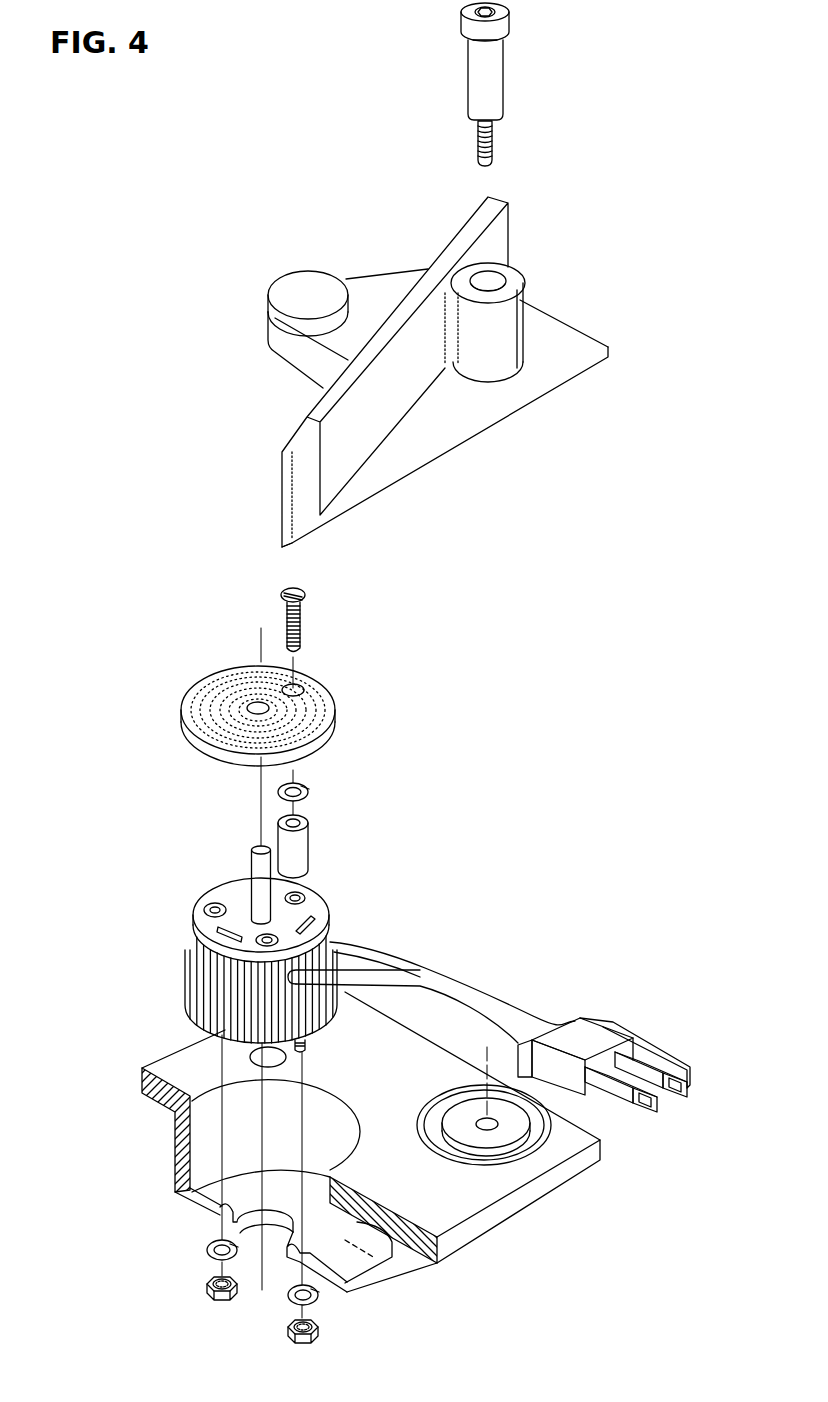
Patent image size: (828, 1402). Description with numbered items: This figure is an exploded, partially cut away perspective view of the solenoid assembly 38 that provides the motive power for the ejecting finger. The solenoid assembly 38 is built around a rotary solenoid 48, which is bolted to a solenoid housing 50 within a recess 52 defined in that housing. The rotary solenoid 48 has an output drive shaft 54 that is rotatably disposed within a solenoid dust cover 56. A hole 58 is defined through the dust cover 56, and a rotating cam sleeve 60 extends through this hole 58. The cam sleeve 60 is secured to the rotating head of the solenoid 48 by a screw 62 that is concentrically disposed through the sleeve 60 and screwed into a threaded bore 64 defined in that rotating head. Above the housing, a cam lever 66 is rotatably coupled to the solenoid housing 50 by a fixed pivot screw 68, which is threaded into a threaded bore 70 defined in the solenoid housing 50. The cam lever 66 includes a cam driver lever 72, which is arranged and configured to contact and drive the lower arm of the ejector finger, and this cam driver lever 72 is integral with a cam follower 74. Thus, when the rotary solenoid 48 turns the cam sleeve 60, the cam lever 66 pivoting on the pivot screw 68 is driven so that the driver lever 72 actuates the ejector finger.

The solenoid assembly 38 is at (607, 606).
The rotary solenoid 48 is at (388, 973).
The solenoid housing 50 is at (373, 1167).
The recess 52 is at (205, 1137).
The output drive shaft 54 is at (248, 893).
The solenoid dust cover 56 is at (256, 737).
The hole 58 is at (307, 690).
The cam sleeve 60 is at (313, 838).
The screw 62 is at (302, 620).
The threaded bore 64 is at (307, 898).
The cam lever 66 is at (440, 372).
The fixed pivot screw 68 is at (505, 88).
The threaded bore 70 is at (503, 1135).
The cam driver lever 72 is at (278, 505).
The cam follower 74 is at (270, 287).